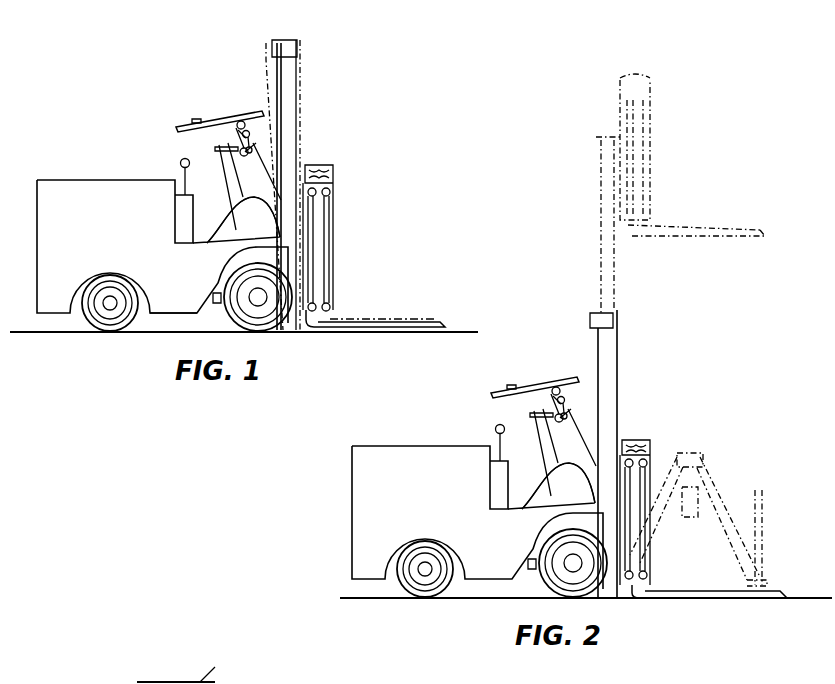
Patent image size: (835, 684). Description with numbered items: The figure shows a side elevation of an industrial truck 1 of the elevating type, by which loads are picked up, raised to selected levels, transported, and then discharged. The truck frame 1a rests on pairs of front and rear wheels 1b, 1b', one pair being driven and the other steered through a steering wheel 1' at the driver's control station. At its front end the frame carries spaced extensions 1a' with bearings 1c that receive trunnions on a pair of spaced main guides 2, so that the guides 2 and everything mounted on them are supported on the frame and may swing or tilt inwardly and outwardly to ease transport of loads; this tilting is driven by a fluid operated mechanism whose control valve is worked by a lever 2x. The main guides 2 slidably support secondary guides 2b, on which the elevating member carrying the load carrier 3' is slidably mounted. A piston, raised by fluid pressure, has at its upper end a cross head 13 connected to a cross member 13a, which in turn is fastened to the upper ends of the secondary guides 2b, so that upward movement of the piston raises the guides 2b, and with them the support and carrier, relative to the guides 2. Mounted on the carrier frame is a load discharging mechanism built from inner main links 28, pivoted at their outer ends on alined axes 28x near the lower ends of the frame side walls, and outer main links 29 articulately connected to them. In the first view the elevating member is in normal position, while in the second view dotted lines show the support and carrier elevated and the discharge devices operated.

In FIG. 1, the industrial truck 1 is at (162, 233).
In FIG. 2, the industrial truck 1 is at (477, 499).
In FIG. 1, the truck frame 1a is at (166, 334).
In FIG. 1, the spaced extensions 1a' is at (243, 220).
In FIG. 2, the spaced extensions 1a' is at (558, 488).
In FIG. 1, the front wheels 1b is at (262, 309).
In FIG. 2, the front wheels 1b is at (578, 575).
In FIG. 1, the rear wheels 1b' is at (99, 315).
In FIG. 2, the rear wheels 1b' is at (406, 584).
In FIG. 1, the bearings 1c is at (306, 172).
In FIG. 2, the bearings 1c is at (618, 445).
In FIG. 1, the steering wheel 1' is at (220, 109).
In FIG. 2, the steering wheel 1' is at (535, 372).
In FIG. 1, the main guides 2 is at (299, 70).
In FIG. 2, the main guides 2 is at (612, 368).
In FIG. 2, the secondary guides 2b is at (613, 278).
In FIG. 1, the lever 2x is at (246, 127).
In FIG. 2, the lever 2x is at (521, 404).
In FIG. 1, the inner main links 28 is at (316, 260).
In FIG. 1, the alined axes 28x is at (318, 293).
In FIG. 1, the outer main links 29 is at (321, 222).
In FIG. 2, the outer main links 29 is at (645, 525).
In FIG. 1, the load carrier 3' is at (375, 307).
In FIG. 2, the load carrier 3' is at (708, 534).
In FIG. 1, the cross head 13 is at (182, 682).
In FIG. 1, the cross member 13a is at (218, 669).